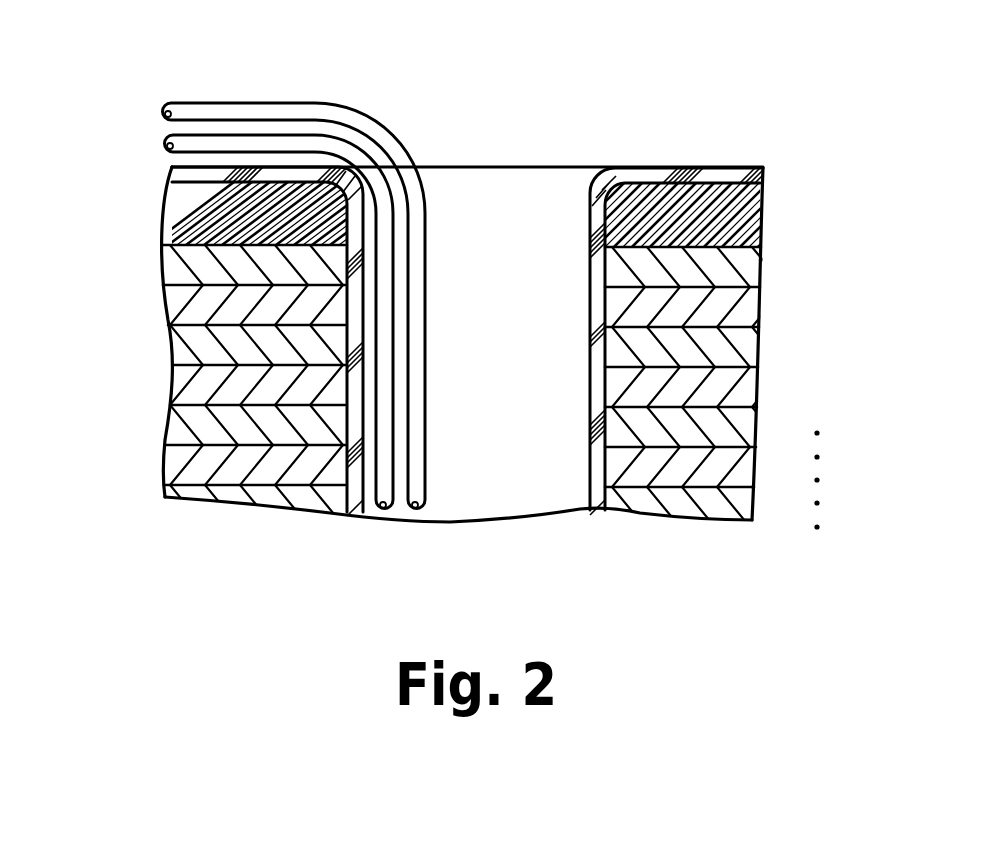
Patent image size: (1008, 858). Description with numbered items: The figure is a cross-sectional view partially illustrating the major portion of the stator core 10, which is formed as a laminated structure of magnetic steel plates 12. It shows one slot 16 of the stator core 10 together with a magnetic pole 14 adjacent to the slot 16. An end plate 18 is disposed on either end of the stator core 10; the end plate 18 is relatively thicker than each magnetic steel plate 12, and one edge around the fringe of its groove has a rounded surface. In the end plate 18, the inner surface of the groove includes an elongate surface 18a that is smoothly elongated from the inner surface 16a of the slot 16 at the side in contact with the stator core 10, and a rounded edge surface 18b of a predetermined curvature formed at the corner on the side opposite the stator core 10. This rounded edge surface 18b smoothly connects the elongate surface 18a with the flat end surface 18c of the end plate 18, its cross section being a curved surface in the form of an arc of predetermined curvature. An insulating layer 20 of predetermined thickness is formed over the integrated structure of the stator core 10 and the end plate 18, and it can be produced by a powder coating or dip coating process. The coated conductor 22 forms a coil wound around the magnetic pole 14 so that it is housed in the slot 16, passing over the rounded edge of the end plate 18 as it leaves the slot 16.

The stator core 10 is at (538, 387).
The magnetic steel plate 12 is at (848, 467).
The magnetic pole 14 is at (594, 282).
The slot 16 is at (512, 328).
The inner surface of the slot 16a is at (597, 384).
The end plate 18 is at (755, 207).
The elongate surface 18a is at (592, 240).
The rounded edge surface 18b is at (592, 165).
The flat end surface 18c is at (690, 185).
The insulating layer 20 is at (240, 196).
The coated conductor 22 is at (230, 105).